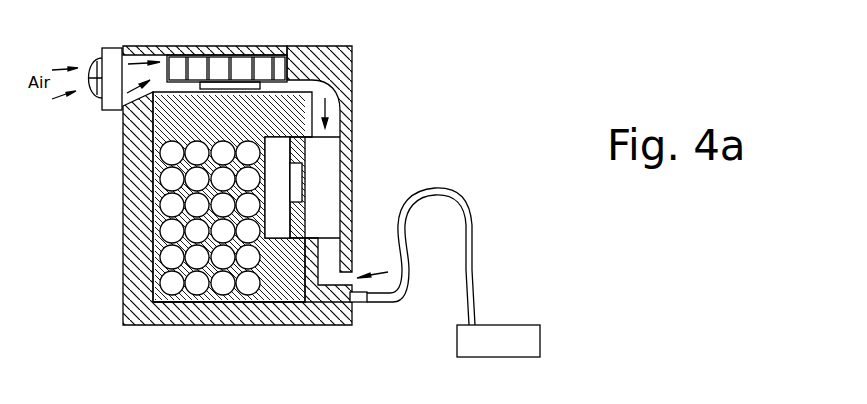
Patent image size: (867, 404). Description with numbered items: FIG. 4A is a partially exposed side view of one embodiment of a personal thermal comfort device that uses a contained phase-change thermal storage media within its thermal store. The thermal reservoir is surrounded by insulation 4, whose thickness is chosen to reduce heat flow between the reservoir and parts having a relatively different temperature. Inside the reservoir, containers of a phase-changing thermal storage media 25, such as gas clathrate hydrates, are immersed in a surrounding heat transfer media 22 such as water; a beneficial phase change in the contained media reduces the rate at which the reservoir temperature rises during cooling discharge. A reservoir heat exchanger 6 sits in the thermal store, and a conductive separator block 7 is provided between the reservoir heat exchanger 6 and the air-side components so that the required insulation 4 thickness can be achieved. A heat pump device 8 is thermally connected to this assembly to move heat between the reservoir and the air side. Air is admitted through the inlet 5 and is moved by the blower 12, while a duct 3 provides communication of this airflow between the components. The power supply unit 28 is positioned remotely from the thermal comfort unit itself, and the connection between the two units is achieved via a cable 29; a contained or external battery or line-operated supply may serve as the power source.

The duct 3 is at (340, 95).
The insulation 4 is at (216, 203).
The inlet 5 is at (356, 267).
The reservoir heat exchanger 6 is at (287, 225).
The conductive separator block 7 is at (298, 177).
The heat pump device 8 is at (303, 198).
The blower 12 is at (287, 53).
The heat transfer media 22 is at (170, 197).
The containers of phase-changing thermal storage media 25 is at (172, 207).
The power supply unit 28 is at (507, 357).
The cable 29 is at (437, 188).